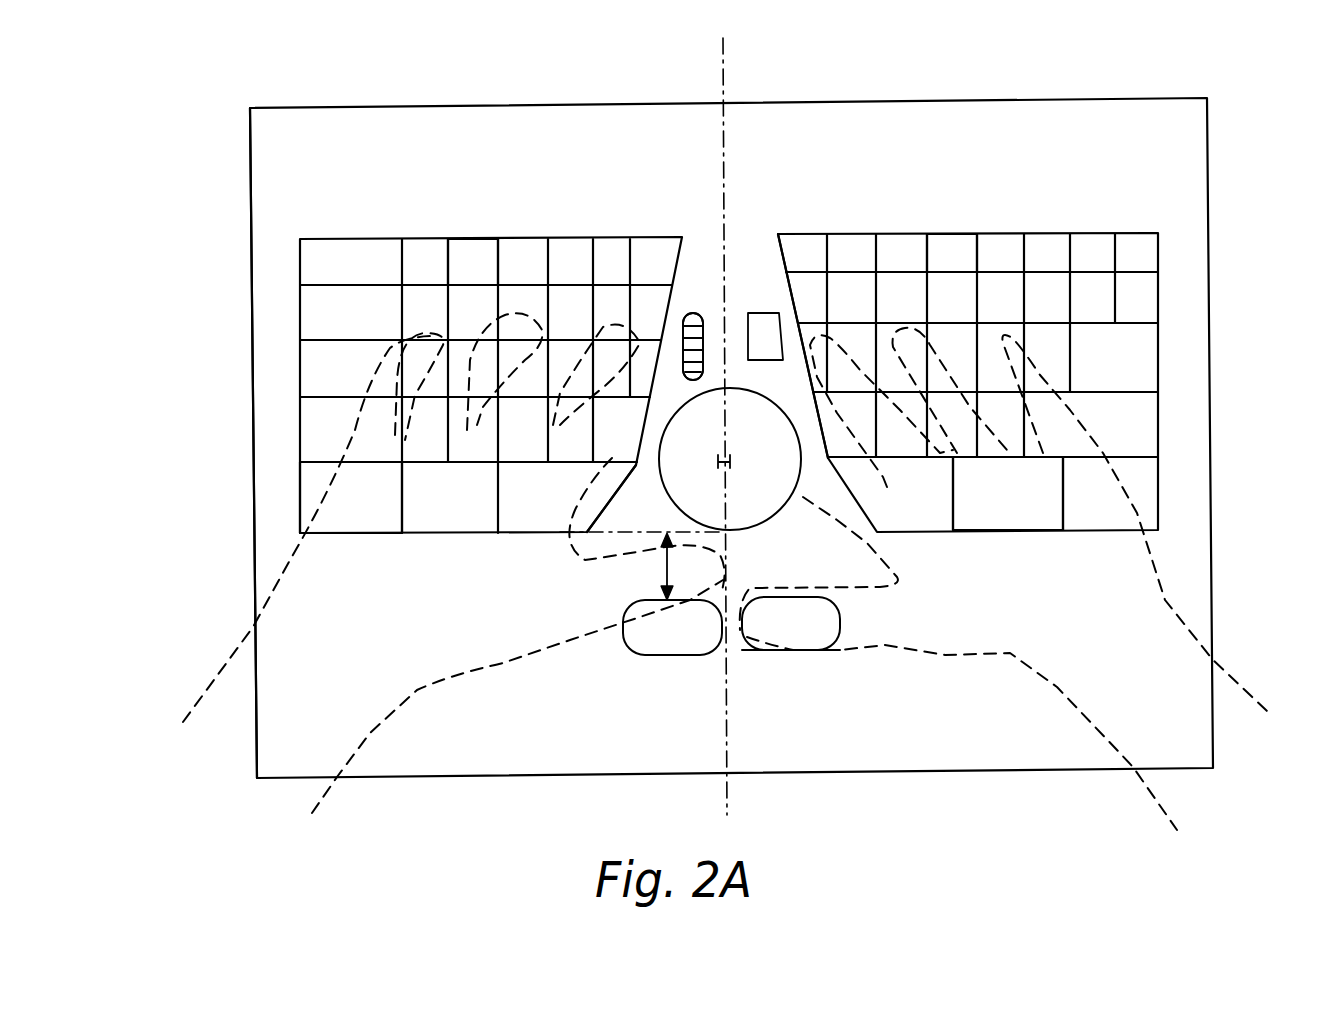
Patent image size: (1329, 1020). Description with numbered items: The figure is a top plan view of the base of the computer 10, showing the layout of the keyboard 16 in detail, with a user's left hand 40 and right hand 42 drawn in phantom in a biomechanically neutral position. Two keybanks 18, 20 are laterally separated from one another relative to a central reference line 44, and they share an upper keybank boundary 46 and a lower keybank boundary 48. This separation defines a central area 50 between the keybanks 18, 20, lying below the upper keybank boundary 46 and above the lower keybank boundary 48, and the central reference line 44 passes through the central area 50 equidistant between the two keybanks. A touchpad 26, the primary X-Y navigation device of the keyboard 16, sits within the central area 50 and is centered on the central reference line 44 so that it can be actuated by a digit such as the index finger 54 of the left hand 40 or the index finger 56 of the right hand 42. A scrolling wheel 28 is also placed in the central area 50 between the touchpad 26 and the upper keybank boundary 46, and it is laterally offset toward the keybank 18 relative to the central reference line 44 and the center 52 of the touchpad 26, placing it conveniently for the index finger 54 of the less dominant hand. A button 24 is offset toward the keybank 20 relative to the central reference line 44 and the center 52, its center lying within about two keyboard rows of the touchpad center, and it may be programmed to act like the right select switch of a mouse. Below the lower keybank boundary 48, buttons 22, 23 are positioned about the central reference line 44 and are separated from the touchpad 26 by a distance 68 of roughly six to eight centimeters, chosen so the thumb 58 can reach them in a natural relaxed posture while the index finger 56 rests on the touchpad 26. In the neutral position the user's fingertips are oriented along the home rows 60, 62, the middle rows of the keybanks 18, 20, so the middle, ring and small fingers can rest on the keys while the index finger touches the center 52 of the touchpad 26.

The computer 10 is at (1254, 194).
The keyboard 16 is at (280, 261).
The keybank 18 is at (340, 228).
The keybank 20 is at (1090, 224).
The button 22 is at (648, 655).
The button 23 is at (770, 650).
The button 24 is at (755, 313).
The touchpad 26 is at (663, 497).
The scrolling wheel 28 is at (692, 312).
The left hand 40 is at (432, 698).
The right hand 42 is at (995, 666).
The central reference line 44 is at (728, 92).
The upper keybank boundary 46 is at (478, 237).
The lower keybank boundary 48 is at (393, 535).
The central area 50 is at (775, 272).
The center of touchpad 52 is at (722, 462).
The index finger 54 is at (688, 330).
The index finger 56 is at (752, 440).
The thumb 58 is at (858, 650).
The home row 60 is at (300, 365).
The home row 62 is at (1160, 333).
The distance 68 is at (663, 568).